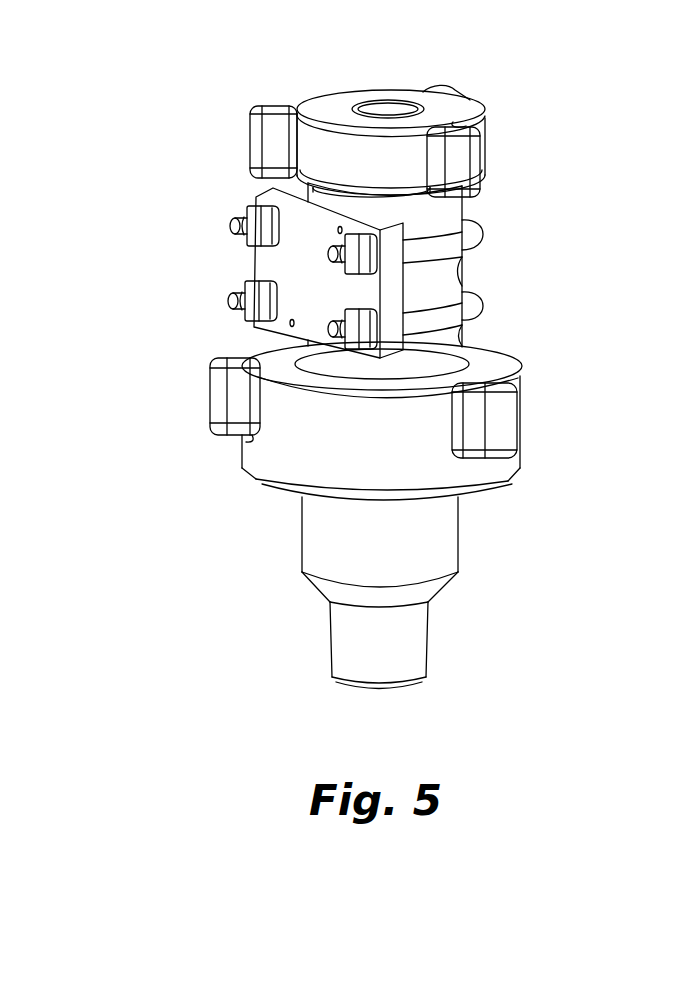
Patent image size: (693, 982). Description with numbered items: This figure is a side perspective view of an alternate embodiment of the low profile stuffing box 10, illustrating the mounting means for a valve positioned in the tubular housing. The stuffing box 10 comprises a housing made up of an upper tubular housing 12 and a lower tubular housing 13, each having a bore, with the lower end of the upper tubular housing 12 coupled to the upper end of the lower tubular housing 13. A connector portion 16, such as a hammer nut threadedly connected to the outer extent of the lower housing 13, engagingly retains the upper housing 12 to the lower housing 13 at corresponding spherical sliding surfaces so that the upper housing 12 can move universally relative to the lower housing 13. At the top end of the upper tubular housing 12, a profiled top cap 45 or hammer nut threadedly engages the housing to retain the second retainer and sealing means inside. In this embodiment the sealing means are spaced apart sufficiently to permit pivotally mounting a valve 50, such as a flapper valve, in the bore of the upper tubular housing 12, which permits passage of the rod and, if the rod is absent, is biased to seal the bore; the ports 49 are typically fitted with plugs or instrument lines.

The low profile stuffing box 10 is at (182, 155).
The upper tubular housing 12 is at (463, 215).
The lower tubular housing 13 is at (459, 548).
The connector portion 16 is at (522, 445).
The profiled top cap 45 is at (487, 143).
The ports 49 is at (459, 268).
The valve 50 is at (226, 262).